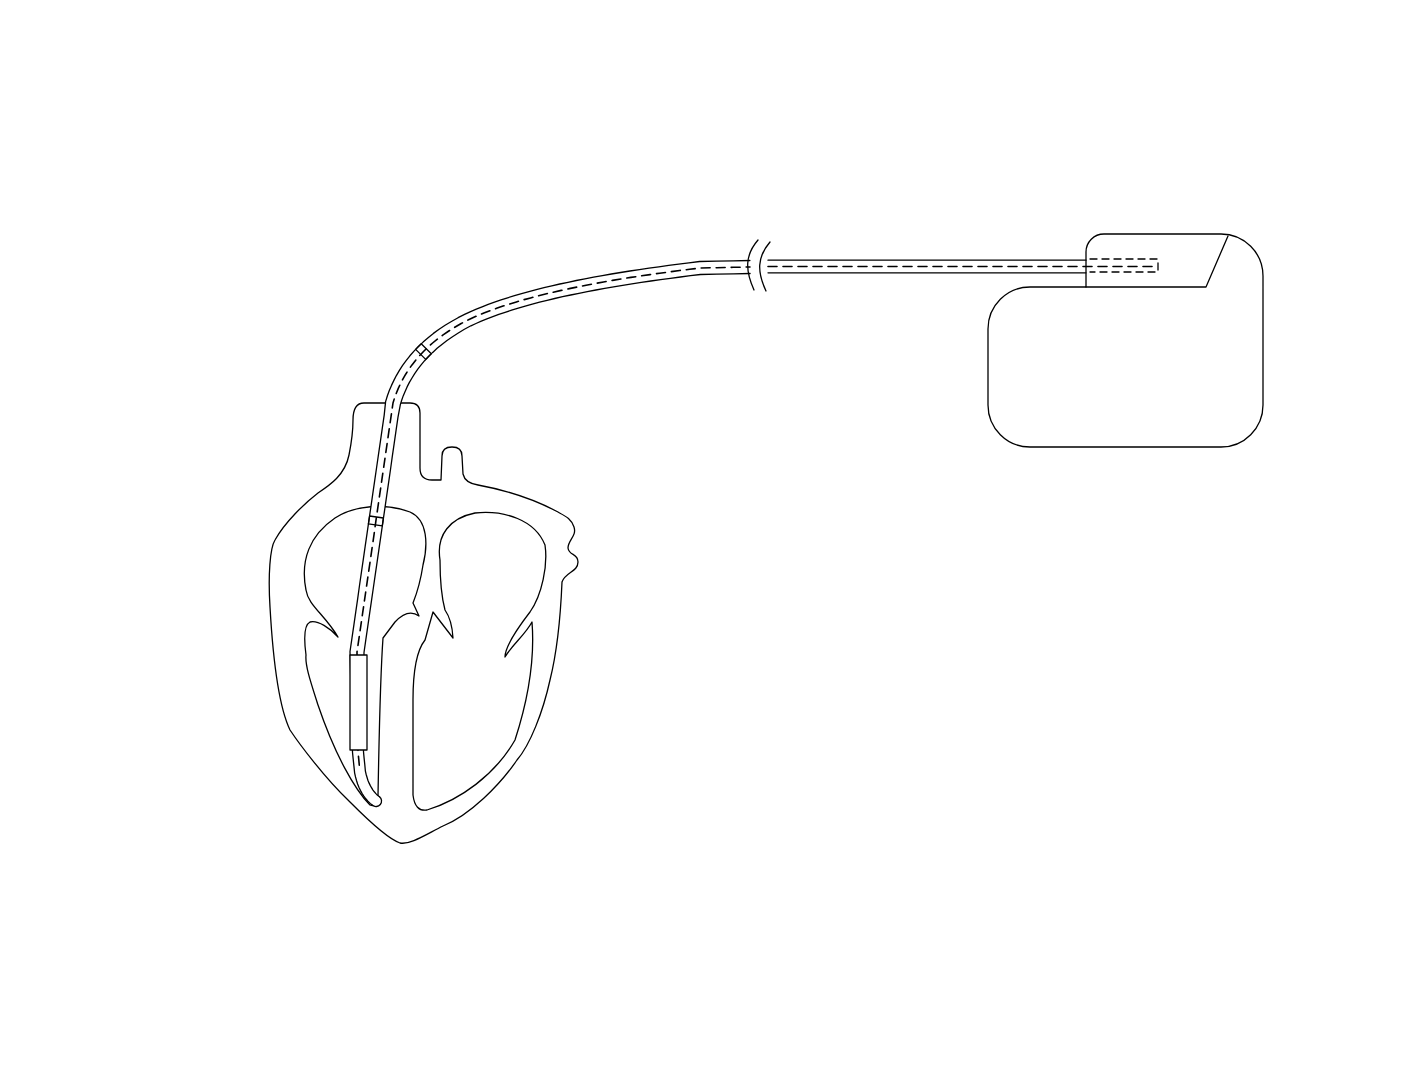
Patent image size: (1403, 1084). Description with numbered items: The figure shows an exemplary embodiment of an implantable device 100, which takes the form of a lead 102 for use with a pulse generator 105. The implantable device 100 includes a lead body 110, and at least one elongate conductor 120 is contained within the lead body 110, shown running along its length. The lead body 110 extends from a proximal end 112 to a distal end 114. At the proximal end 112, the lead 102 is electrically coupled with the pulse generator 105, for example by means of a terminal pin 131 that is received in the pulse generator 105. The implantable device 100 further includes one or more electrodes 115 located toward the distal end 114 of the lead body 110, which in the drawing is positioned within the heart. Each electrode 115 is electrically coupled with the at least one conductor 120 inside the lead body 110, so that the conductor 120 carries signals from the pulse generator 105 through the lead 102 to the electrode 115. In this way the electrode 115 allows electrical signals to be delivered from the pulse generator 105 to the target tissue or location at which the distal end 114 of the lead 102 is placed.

The implantable device 100 is at (1267, 165).
The lead 102 is at (818, 258).
The pulse generator 105 is at (1266, 309).
The lead body 110 is at (932, 259).
The proximal end 112 is at (1042, 259).
The distal end 114 is at (363, 775).
The electrode 115 is at (358, 698).
The elongate conductor 120 is at (958, 275).
The terminal pin 131 is at (1120, 258).